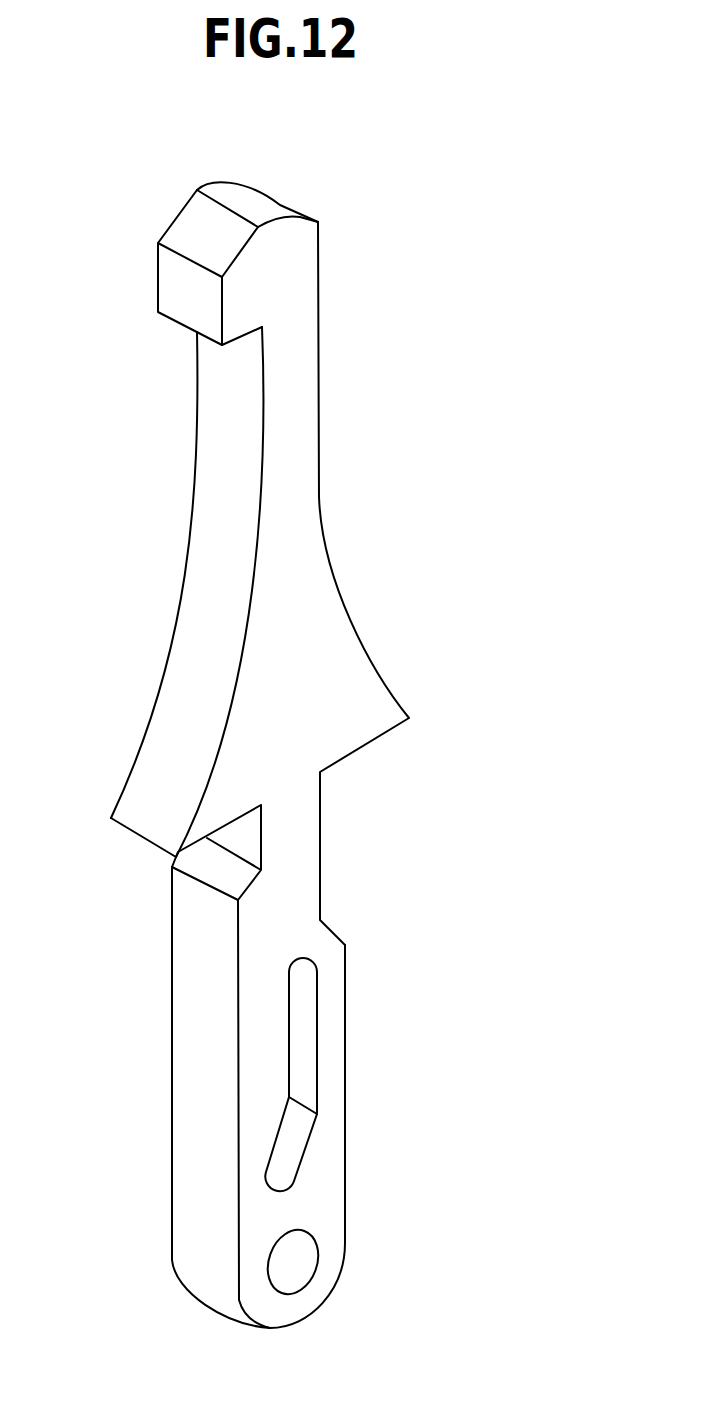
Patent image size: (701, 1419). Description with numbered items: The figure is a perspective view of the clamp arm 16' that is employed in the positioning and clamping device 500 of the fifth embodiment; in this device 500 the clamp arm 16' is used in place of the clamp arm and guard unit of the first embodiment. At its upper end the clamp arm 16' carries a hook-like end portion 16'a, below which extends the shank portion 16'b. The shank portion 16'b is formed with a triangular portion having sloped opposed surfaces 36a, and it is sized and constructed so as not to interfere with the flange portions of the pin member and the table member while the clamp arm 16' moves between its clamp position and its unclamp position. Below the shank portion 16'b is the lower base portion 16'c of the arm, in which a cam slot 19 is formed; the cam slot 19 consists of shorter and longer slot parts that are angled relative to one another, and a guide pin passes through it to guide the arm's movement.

The positioning and clamping device 500 is at (527, 187).
The clamp arm 16' is at (256, 753).
The hook portion of lever 16'a is at (202, 262).
The shank portion 16'b is at (275, 539).
The sloped opposed surfaces 36a is at (362, 650).
The cam slot 19 is at (305, 1042).
The base portion of lever 16'c is at (307, 1066).